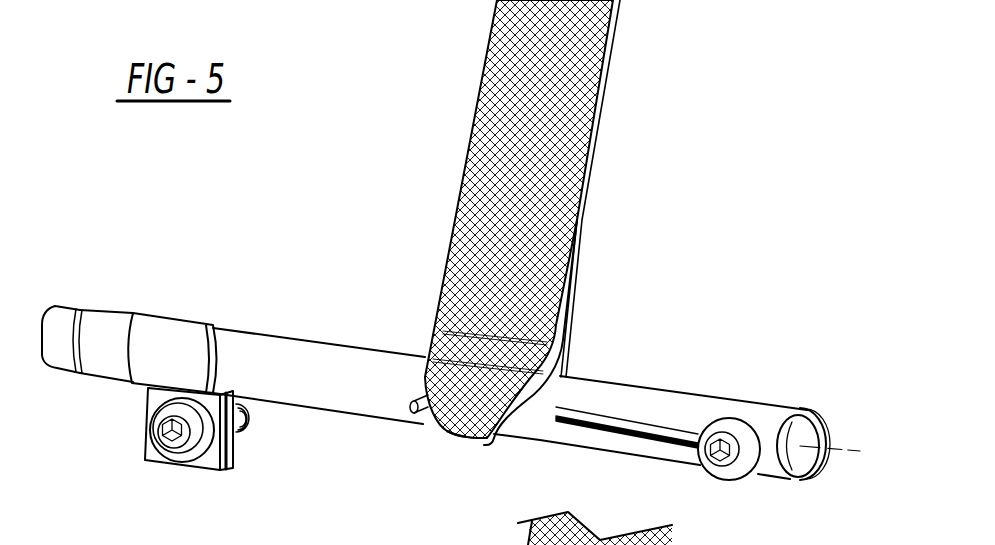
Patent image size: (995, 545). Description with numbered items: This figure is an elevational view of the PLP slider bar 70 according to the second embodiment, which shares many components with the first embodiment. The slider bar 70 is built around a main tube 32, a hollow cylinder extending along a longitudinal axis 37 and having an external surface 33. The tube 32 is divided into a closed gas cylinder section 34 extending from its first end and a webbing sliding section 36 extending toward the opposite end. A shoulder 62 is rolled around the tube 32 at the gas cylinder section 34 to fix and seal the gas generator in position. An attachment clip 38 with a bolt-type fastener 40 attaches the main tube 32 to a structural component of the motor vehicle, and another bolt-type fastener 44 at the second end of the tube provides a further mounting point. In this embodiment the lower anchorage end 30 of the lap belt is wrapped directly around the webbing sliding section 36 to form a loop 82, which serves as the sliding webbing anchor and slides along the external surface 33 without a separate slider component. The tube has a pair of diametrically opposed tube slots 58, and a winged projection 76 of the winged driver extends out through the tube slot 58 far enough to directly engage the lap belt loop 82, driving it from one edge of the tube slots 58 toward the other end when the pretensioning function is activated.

The lower anchorage end 30 is at (603, 103).
The main tube 32 is at (355, 380).
The external surface 33 is at (287, 383).
The gas cylinder section 34 is at (308, 357).
The webbing sliding section 36 is at (750, 411).
The longitudinal axis 37 is at (835, 447).
The attachment clip 38 is at (180, 314).
The bolt-type fastener 40 is at (172, 447).
The bolt-type fastener 44 is at (735, 470).
The tube slot 58 is at (598, 422).
The shoulder 62 is at (78, 310).
The PLP slider bar 70 is at (268, 287).
The winged projection 76 is at (413, 408).
The loop 82 is at (468, 426).